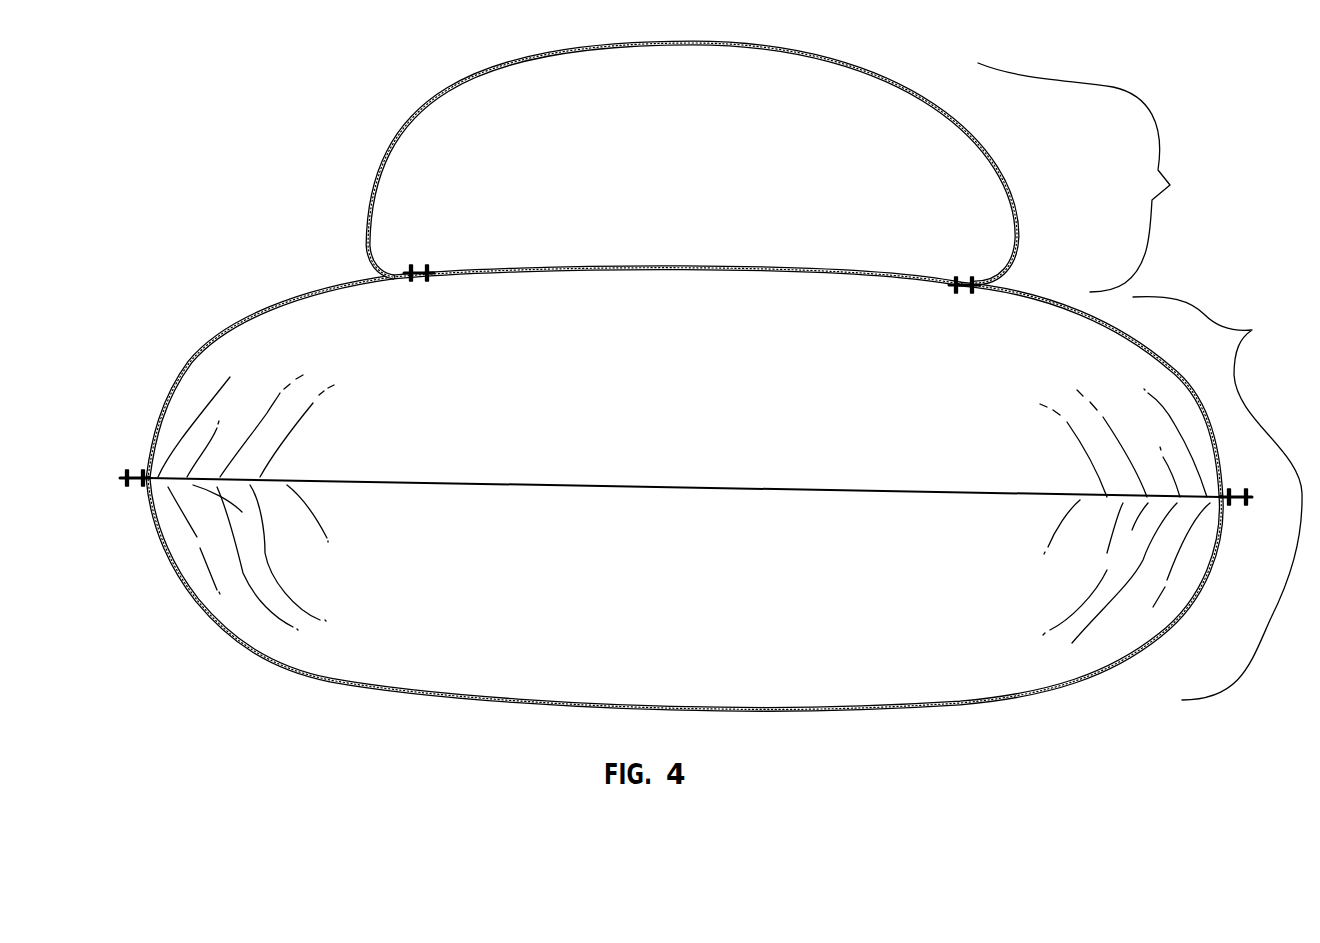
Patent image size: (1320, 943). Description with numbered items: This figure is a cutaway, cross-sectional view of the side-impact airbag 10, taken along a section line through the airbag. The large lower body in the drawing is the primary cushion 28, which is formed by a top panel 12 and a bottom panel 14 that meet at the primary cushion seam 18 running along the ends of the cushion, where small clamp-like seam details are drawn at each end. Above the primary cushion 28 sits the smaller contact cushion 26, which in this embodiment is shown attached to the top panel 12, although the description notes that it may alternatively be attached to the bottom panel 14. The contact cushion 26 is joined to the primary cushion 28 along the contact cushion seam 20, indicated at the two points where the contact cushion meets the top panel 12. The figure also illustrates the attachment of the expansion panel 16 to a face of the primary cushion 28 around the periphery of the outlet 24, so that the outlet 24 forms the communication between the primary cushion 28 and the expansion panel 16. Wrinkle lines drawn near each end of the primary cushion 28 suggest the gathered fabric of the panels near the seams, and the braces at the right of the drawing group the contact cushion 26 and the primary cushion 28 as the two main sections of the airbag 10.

The airbag 10 is at (675, 376).
The top panel 12 is at (233, 321).
The bottom panel 14 is at (242, 648).
The expansion panel 16 is at (432, 104).
The primary cushion seam 18 is at (135, 470).
The contact cushion seam 20 is at (420, 268).
The outlet 24 is at (488, 263).
The contact cushion 26 is at (1091, 177).
The primary cushion 28 is at (1217, 498).